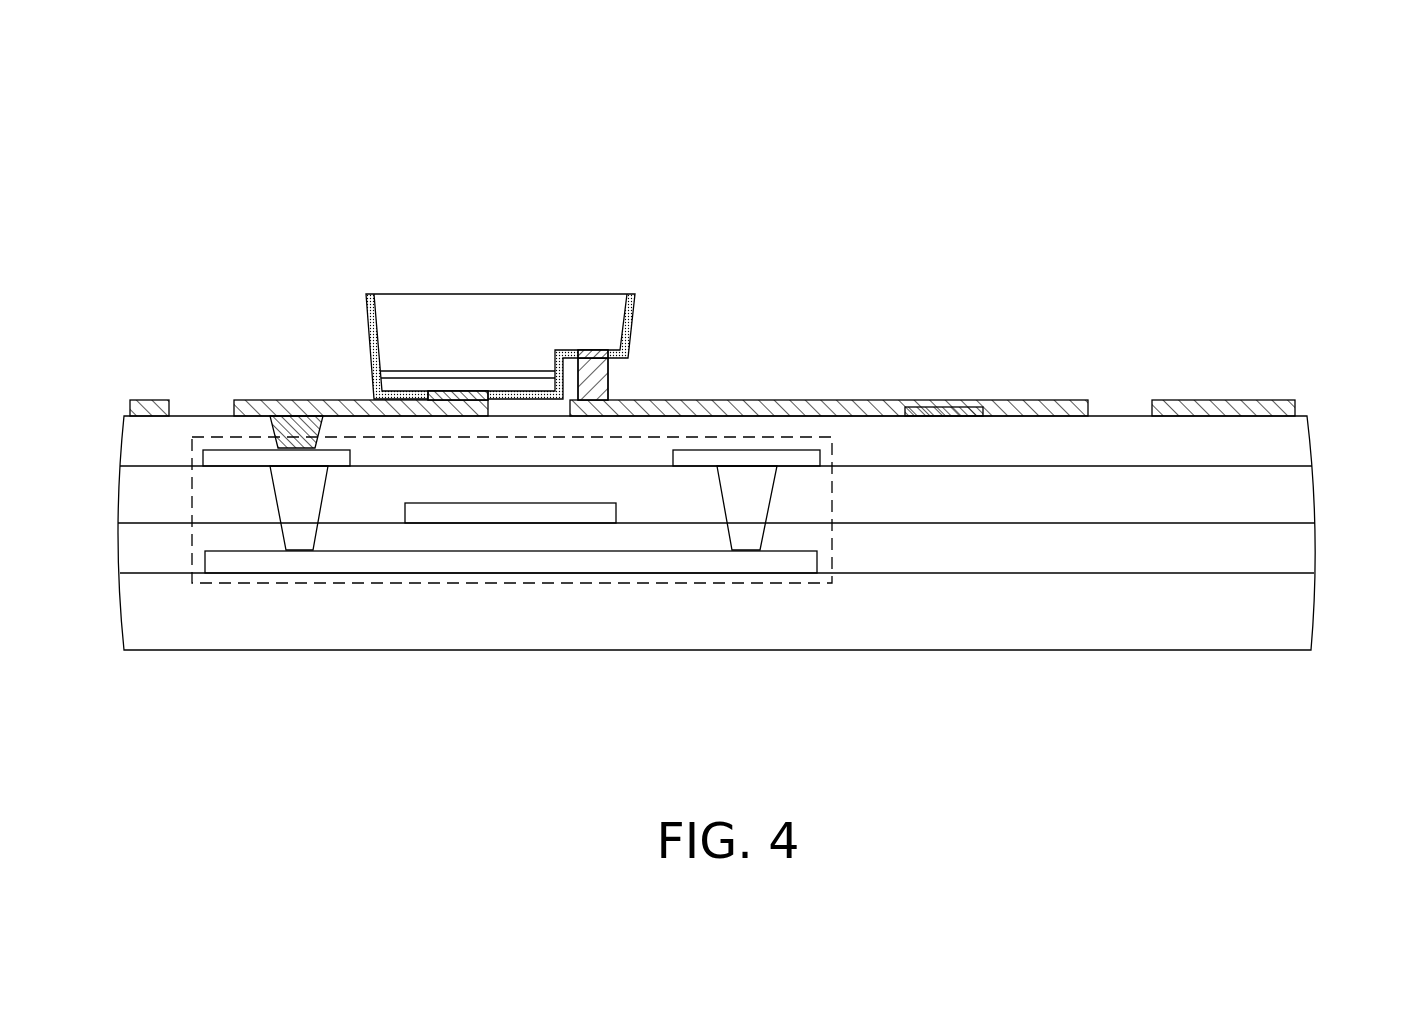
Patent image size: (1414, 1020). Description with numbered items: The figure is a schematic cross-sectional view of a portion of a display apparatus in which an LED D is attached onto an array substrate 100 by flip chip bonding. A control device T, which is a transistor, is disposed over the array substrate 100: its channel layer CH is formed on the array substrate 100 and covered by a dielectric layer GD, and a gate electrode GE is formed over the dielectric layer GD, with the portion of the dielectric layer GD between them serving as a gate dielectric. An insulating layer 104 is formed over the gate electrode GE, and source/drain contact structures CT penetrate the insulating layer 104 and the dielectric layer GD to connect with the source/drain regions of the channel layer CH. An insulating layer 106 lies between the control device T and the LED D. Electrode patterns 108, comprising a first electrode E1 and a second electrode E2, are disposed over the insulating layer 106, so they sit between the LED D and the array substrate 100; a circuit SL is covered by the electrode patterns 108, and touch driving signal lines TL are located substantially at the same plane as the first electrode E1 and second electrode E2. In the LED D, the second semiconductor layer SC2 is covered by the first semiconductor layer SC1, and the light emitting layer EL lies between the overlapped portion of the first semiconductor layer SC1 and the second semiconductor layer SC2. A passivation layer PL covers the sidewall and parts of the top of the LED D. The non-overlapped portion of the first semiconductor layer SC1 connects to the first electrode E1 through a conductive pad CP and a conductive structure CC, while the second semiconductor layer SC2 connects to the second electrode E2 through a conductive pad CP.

The array substrate 100 is at (1245, 636).
The insulating layer 104 is at (1295, 490).
The insulating layer 106 is at (1295, 447).
The electrode patterns 108 is at (661, 255).
The dielectric layer GD is at (1295, 548).
The control device T is at (802, 583).
The channel layer CH is at (432, 558).
The gate electrode GE is at (520, 515).
The source/drain contact structures CT is at (298, 528).
The touch driving signal lines TL is at (152, 398).
The first electrode E1 is at (877, 405).
The second electrode E2 is at (313, 398).
The circuit SL is at (950, 410).
The passivation layer PL is at (628, 303).
The LED D is at (350, 225).
The first semiconductor layer SC1 is at (570, 315).
The light emitting layer EL is at (505, 373).
The second semiconductor layer SC2 is at (470, 387).
The conductive structure CC is at (600, 383).
The conductive pad CP is at (438, 392).